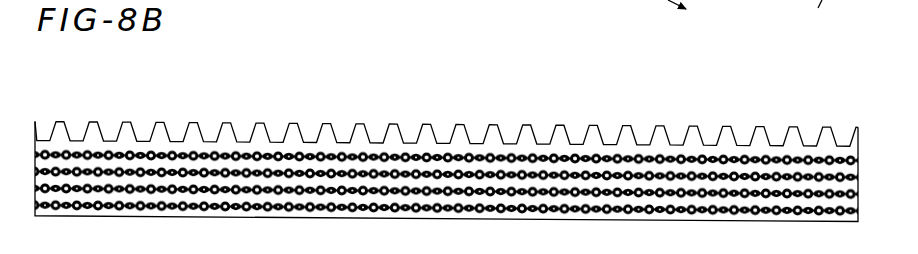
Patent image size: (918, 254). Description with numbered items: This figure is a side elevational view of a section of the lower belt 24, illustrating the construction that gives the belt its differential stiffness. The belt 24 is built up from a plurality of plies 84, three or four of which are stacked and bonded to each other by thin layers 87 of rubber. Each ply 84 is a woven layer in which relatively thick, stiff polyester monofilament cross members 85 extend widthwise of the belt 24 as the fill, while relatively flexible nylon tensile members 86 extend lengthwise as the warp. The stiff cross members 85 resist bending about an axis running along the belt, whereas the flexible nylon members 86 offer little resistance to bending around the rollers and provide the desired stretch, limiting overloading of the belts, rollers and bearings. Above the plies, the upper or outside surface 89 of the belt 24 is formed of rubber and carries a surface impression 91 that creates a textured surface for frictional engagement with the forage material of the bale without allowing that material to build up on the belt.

The lower belt 24 is at (215, 119).
The plies 84 is at (34, 205).
The polyester monofilament cross members 85 is at (464, 206).
The nylon tensile members 86 is at (577, 207).
The thin layers of rubber 87 is at (669, 197).
The upper or outside surface 89 is at (764, 151).
The surface impression 91 is at (418, 123).